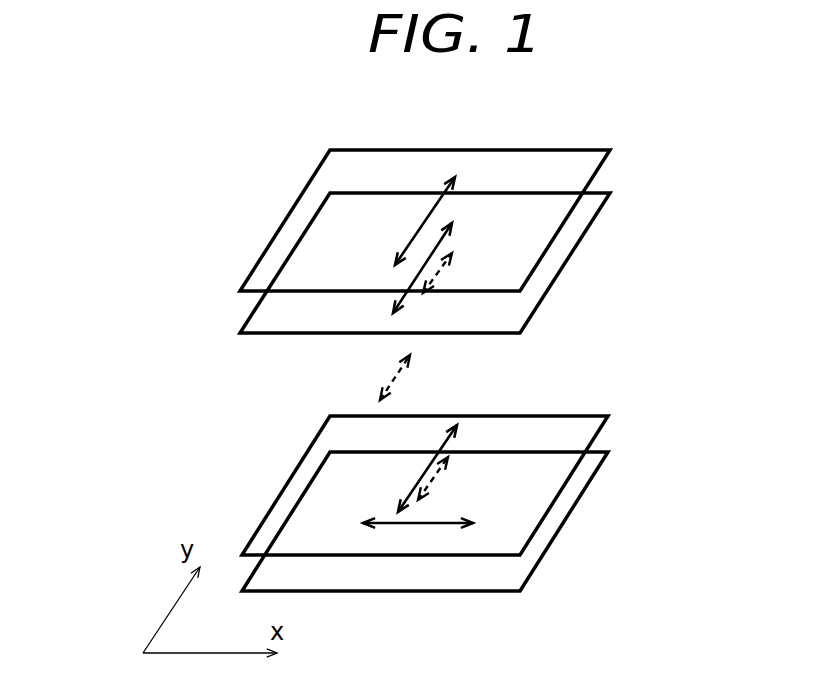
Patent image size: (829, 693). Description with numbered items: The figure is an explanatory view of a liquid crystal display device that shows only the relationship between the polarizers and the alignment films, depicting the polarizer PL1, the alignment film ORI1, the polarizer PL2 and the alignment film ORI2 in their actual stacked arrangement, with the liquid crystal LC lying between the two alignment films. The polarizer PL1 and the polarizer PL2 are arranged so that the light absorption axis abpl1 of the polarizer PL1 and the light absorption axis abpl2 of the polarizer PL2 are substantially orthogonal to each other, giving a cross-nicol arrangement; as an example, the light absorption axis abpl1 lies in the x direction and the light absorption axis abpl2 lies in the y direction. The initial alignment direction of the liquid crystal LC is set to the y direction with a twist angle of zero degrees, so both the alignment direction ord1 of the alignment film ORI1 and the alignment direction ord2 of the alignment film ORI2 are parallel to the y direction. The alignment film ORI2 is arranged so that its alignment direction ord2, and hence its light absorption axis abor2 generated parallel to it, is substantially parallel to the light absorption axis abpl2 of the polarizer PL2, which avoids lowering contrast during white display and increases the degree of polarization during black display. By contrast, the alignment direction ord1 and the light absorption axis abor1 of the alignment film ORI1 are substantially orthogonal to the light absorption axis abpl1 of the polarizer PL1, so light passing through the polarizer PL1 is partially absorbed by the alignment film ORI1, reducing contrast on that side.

The polarizer PL2 is at (598, 168).
The alignment film ORI2 is at (572, 255).
The light absorption axis abpl2 is at (430, 212).
The light absorption axis abor2 is at (415, 278).
The alignment direction ord2 is at (430, 278).
The liquid crystal LC is at (372, 377).
The alignment film ORI1 is at (598, 433).
The polarizer PL1 is at (572, 512).
The light absorption axis abor1 is at (417, 478).
The alignment direction ord1 is at (447, 483).
The light absorption axis abpl1 is at (415, 523).